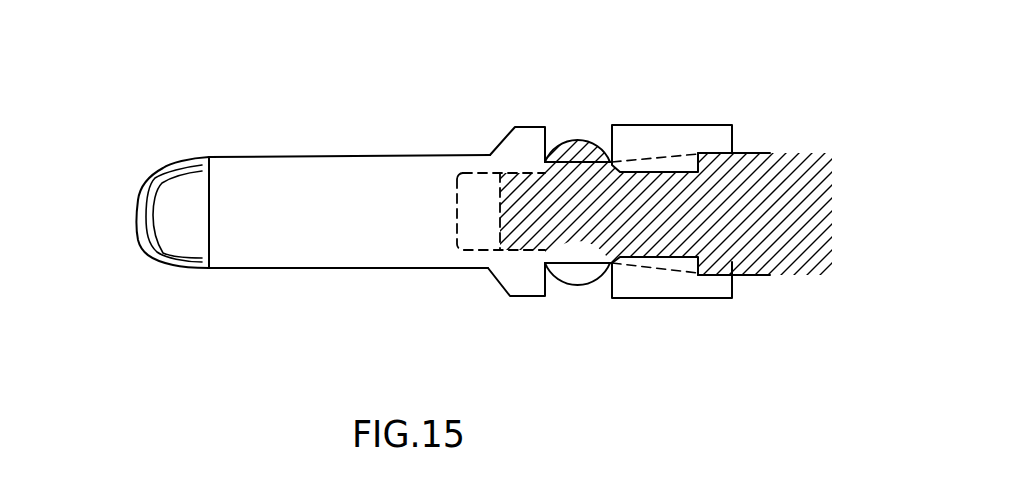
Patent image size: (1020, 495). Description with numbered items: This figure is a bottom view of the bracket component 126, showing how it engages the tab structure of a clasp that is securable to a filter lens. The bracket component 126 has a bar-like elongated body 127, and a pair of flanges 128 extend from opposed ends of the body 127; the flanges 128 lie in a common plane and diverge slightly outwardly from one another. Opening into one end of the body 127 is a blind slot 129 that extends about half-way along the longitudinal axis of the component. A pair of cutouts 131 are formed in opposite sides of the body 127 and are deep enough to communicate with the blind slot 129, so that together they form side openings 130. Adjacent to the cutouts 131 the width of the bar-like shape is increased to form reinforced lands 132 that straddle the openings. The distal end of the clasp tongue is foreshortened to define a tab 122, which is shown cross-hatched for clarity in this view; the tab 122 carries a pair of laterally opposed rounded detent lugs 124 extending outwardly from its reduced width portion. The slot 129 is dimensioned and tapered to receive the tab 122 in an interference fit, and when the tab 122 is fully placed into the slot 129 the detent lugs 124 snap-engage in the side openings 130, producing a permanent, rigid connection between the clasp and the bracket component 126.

The tab 122 is at (753, 148).
The detent lugs 124 is at (582, 290).
The bracket component 126 is at (214, 127).
The bar-like elongated body 127 is at (305, 220).
The flanges 128 is at (163, 165).
The blind slot 129 is at (450, 213).
The side openings 130 is at (577, 142).
The cutouts 131 is at (610, 138).
The reinforced lands 132 is at (535, 142).